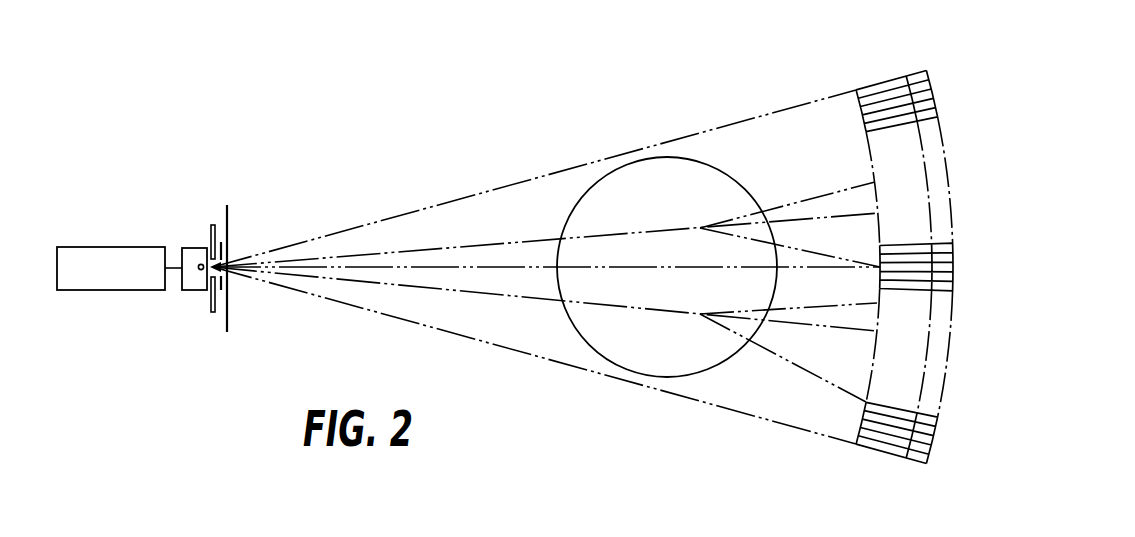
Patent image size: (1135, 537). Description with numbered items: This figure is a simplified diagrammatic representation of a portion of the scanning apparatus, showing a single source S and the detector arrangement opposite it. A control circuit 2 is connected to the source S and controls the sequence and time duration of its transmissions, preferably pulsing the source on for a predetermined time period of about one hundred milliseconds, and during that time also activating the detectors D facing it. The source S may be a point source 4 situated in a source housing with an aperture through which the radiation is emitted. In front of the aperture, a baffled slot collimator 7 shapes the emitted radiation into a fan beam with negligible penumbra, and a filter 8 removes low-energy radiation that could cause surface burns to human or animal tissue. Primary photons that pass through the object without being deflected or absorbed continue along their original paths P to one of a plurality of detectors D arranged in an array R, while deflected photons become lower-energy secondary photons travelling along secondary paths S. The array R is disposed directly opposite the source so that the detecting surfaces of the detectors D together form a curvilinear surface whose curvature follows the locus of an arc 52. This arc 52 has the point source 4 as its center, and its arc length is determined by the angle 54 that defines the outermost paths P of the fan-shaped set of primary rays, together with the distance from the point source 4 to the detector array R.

The control circuit 2 is at (75, 290).
The point source 4 is at (200, 270).
The baffled slot collimator 7 is at (213, 312).
The filter 8 is at (228, 225).
The arc 52 is at (864, 150).
The angle 54 is at (350, 352).
The source S is at (215, 195).
The path P is at (485, 193).
The array R is at (882, 62).
The detector D is at (930, 71).